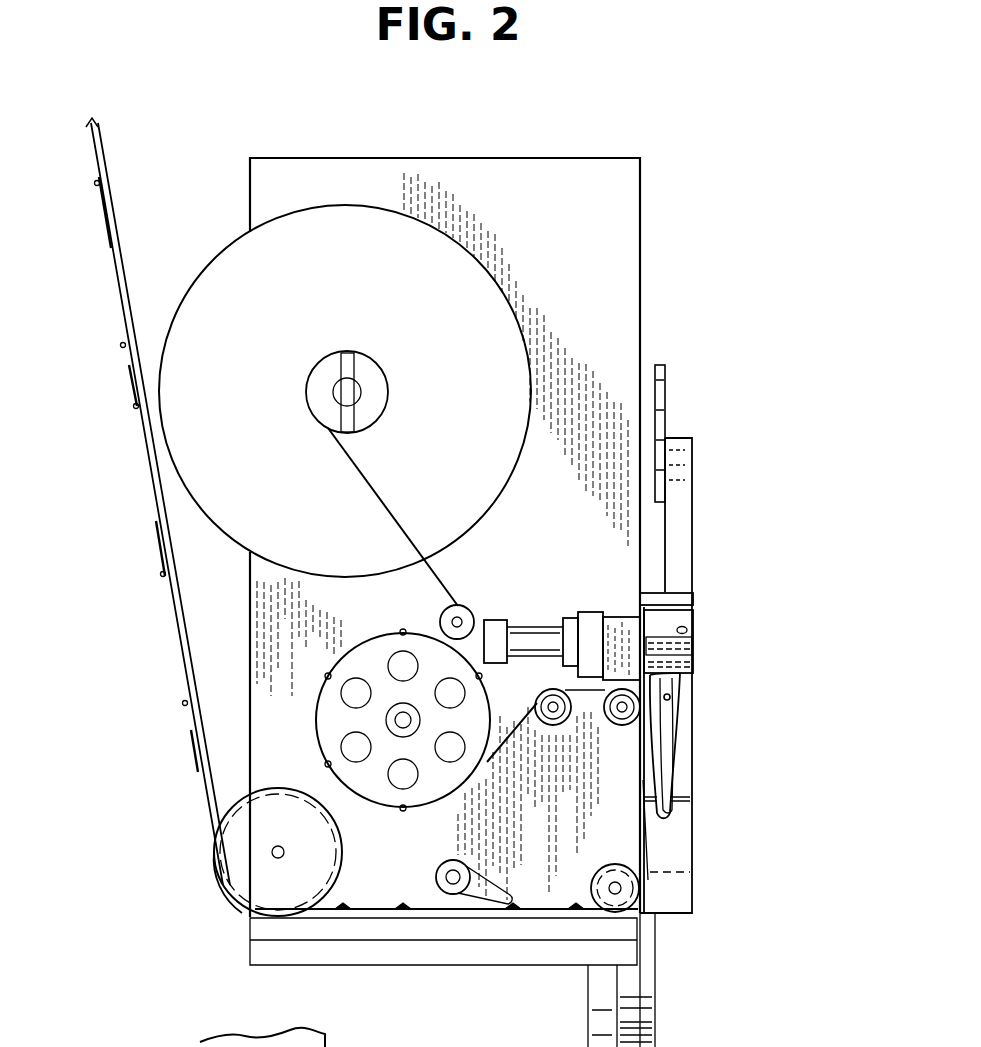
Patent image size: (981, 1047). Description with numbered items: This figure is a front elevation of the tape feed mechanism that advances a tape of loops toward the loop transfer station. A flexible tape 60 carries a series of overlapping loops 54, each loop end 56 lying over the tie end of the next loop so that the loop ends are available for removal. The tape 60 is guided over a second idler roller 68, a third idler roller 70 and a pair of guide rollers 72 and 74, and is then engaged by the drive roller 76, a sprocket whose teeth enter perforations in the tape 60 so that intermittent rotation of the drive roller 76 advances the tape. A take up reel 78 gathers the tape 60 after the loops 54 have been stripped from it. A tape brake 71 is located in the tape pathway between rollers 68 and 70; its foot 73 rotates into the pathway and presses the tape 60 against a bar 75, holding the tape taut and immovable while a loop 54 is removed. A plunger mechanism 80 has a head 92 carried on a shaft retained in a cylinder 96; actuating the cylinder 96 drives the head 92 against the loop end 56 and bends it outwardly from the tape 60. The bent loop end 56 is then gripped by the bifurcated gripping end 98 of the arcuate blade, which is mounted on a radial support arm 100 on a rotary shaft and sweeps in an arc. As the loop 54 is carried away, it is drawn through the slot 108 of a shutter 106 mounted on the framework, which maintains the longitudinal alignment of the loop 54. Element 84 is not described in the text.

The loops 54 is at (131, 404).
The loop end 56 is at (645, 609).
The flexible tape 60 is at (118, 279).
The second idler roller 68 is at (318, 866).
The third idler roller 70 is at (596, 868).
The tape brake 71 is at (456, 860).
The guide roller 72 is at (622, 720).
The foot 73 is at (500, 880).
The guide roller 74 is at (553, 720).
The bar 75 is at (357, 933).
The drive roller 76 is at (340, 720).
The take up reel 78 is at (397, 390).
The plunger mechanism 80 is at (512, 625).
The block 84 is at (693, 645).
The head 92 is at (620, 628).
The cylinder 96 is at (535, 637).
The bifurcated gripping end 98 is at (666, 467).
The radial support arm 100 is at (695, 530).
The shutter 106 is at (688, 745).
The slot 108 is at (670, 695).